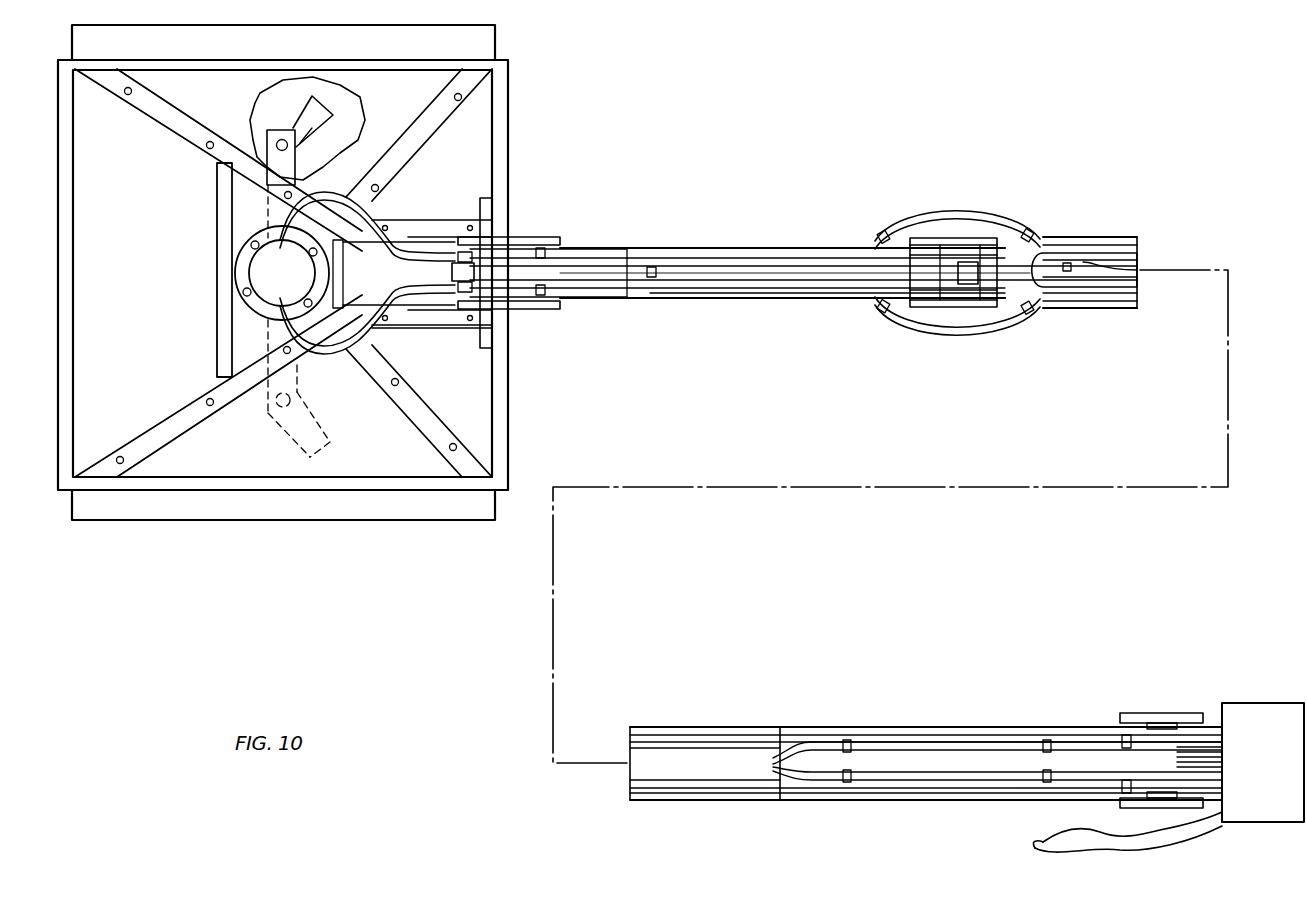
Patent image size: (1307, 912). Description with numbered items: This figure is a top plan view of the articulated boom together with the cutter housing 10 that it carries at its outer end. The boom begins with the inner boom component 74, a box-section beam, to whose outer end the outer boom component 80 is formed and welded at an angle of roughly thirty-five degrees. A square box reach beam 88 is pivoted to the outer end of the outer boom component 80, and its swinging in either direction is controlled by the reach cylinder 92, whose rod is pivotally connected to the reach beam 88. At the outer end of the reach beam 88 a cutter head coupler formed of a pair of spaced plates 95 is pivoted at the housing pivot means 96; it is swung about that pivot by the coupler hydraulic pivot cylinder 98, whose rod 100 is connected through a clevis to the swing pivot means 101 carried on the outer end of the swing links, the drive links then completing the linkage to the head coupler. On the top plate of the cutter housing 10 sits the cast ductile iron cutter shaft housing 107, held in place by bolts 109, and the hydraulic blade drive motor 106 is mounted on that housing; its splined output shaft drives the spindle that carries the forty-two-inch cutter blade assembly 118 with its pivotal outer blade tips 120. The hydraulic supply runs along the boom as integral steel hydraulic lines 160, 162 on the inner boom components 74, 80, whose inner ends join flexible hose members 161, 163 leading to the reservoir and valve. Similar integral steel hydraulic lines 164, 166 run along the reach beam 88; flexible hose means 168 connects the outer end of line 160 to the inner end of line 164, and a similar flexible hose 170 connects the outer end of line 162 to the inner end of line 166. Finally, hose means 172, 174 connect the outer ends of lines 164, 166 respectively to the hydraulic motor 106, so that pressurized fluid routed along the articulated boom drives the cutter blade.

The cutter housing 10 is at (513, 138).
The inner boom component 74 is at (960, 728).
The outer boom component 80 is at (1050, 302).
The reach beam 88 is at (614, 250).
The reach cylinder 92 is at (1047, 255).
The spaced plates 95 is at (432, 230).
The housing pivot means 96 is at (486, 327).
The coupler hydraulic pivot cylinder 98 is at (670, 288).
The rod 100 is at (565, 298).
The swing pivot means 101 is at (498, 210).
The hydraulic blade drive motor 106 is at (352, 274).
The cutter shaft housing 107 is at (243, 255).
The bolts 109 is at (253, 241).
The cutter blade assembly 118 is at (290, 168).
The pivotal outer blade tips 120 is at (318, 100).
The integral steel hydraulic line 160 is at (1092, 240).
The flexible hose member 161 is at (1130, 718).
The integral steel hydraulic line 162 is at (1118, 302).
The flexible hose member 163 is at (1208, 788).
The integral steel hydraulic line 164 is at (690, 252).
The integral steel hydraulic line 166 is at (785, 296).
The flexible hose means 168 is at (960, 210).
The flexible hose 170 is at (958, 332).
The hose means 172 is at (372, 210).
The hose means 174 is at (330, 352).